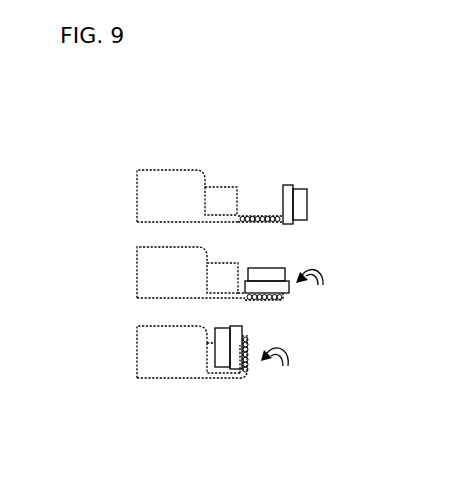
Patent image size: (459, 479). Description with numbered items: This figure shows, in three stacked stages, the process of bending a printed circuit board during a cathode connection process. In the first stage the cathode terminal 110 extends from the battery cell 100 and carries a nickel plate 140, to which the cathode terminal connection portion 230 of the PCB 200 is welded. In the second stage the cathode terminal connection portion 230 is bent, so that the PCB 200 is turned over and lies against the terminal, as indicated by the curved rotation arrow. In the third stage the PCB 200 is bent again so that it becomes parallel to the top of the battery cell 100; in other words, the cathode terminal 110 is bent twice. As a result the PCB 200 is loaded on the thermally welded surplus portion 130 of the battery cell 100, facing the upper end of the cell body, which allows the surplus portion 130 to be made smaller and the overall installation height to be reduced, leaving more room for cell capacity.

The battery cell 100 is at (153, 165).
The cathode terminal 110 is at (250, 214).
The thermally welded surplus portion 130 is at (220, 378).
The nickel plate 140 is at (266, 214).
The PCB 200 is at (302, 184).
The cathode terminal connection portion 230 is at (277, 299).